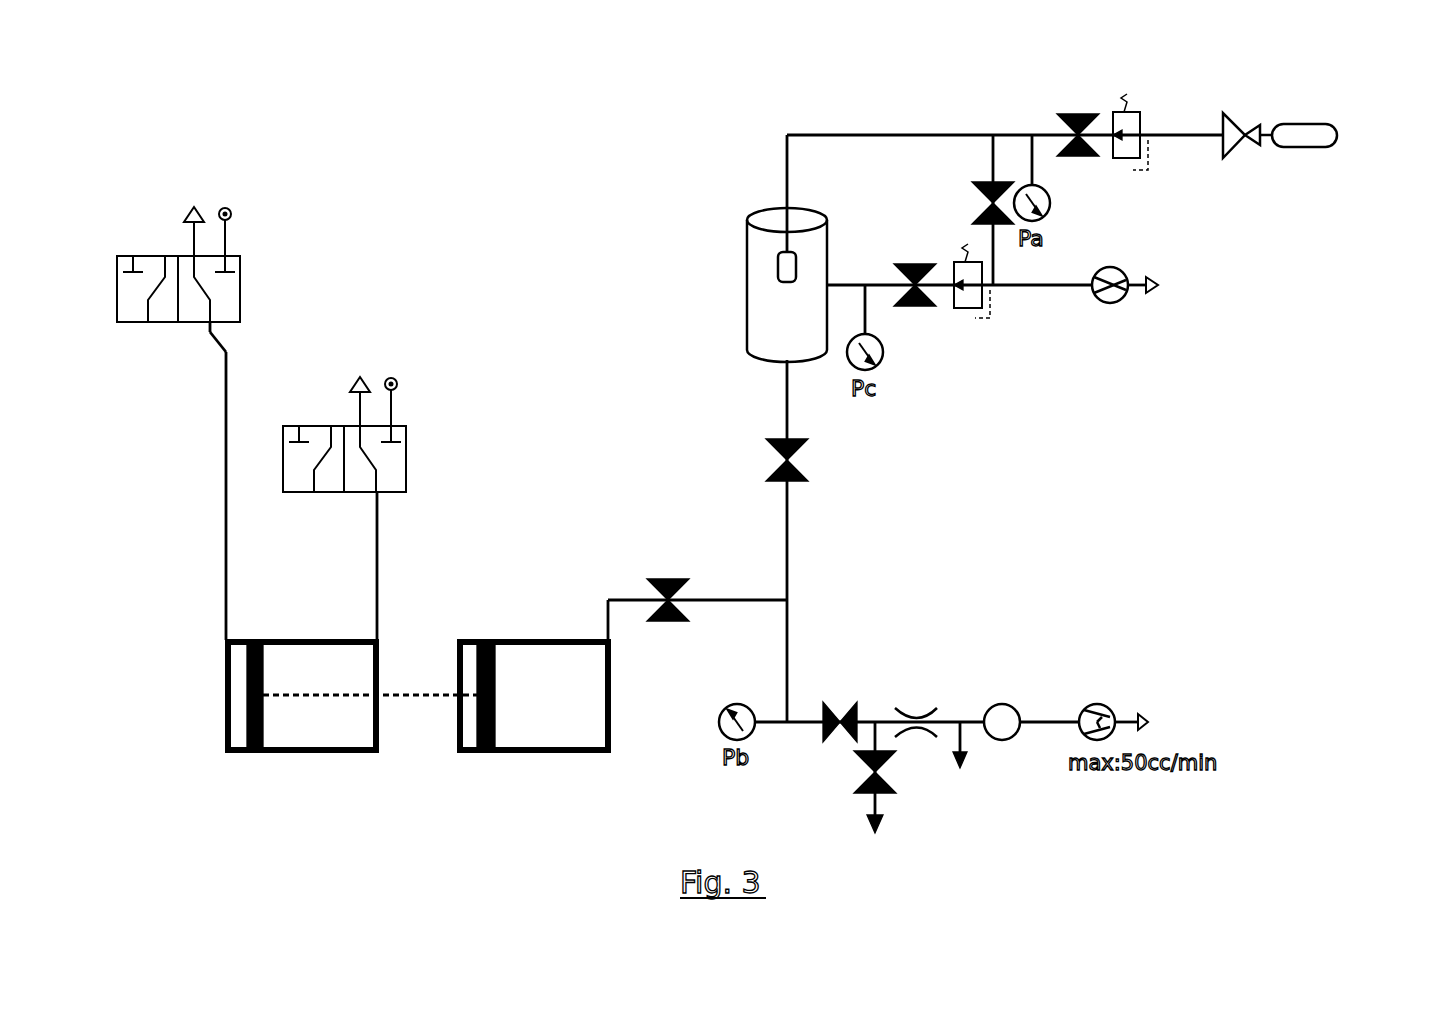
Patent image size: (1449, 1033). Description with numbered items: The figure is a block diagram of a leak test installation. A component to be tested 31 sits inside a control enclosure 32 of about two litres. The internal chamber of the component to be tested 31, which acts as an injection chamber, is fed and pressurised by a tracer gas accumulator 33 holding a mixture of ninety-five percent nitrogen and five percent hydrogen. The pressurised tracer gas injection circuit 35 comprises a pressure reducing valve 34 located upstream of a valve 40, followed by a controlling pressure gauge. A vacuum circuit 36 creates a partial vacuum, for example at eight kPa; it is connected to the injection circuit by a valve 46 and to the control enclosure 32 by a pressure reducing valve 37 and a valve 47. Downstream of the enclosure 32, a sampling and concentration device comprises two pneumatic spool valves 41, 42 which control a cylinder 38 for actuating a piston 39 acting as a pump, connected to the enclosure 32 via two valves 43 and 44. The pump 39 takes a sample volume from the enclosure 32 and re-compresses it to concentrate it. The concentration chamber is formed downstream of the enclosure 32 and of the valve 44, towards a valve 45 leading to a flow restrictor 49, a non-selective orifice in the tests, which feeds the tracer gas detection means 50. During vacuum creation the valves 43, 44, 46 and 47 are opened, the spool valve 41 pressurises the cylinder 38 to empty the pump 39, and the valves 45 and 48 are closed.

The component to be tested 31 is at (780, 262).
The control enclosure 32 is at (745, 311).
The tracer gas accumulator 33 is at (1307, 134).
The pressure reducing valve 34 is at (1138, 112).
The pressurised tracer gas injection circuit 35 is at (918, 116).
The vacuum circuit 36 is at (1158, 298).
The pressure reducing valve 37 is at (975, 302).
The cylinder 38 is at (330, 672).
The piston 39 is at (571, 672).
The valve 40 is at (1078, 113).
The pneumatic spool valve 41 is at (117, 256).
The pneumatic spool valve 42 is at (303, 426).
The valve 43 is at (661, 582).
The valve 44 is at (775, 462).
The valve 45 is at (836, 700).
The valve 46 is at (975, 195).
The valve 47 is at (912, 264).
The valve 48 is at (856, 775).
The flow restrictor 49 is at (917, 718).
The tracer gas detection means 50 is at (1002, 741).